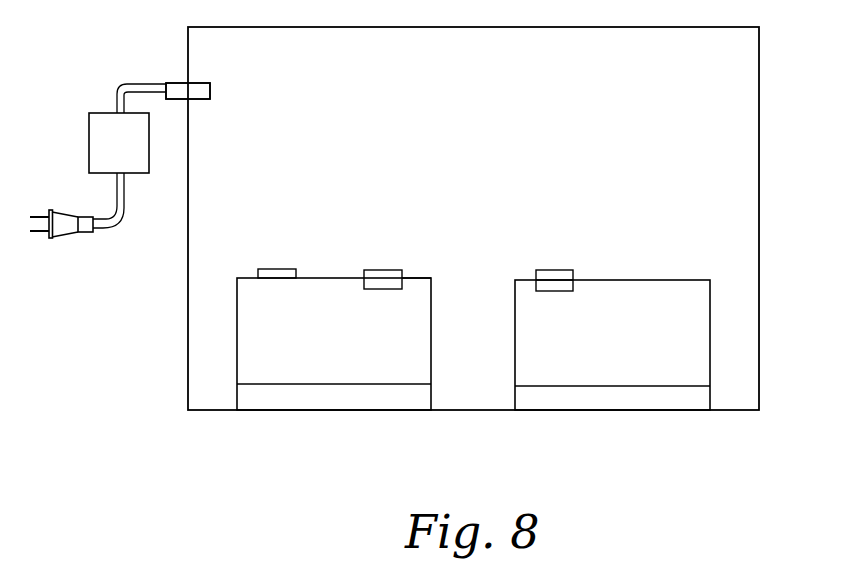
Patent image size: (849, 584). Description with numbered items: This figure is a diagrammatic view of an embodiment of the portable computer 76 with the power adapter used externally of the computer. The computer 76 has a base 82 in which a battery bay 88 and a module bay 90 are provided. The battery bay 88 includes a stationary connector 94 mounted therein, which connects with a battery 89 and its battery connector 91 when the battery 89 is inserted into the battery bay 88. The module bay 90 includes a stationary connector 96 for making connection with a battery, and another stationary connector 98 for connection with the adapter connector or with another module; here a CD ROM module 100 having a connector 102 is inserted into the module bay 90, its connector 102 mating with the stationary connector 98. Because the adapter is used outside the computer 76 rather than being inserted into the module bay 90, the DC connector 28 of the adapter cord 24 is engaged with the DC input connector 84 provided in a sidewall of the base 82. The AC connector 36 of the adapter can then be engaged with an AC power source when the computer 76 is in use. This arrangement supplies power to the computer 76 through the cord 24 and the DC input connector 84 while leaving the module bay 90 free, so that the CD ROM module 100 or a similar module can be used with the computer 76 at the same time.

The cord 24 is at (135, 84).
The DC input connector 84 is at (200, 82).
The DC connector 28 is at (173, 100).
The AC connector 36 is at (72, 234).
The base 82 is at (765, 65).
The portable computer 76 is at (434, 234).
The module bay 90 is at (343, 340).
The CD ROM module 100 is at (343, 386).
The stationary connector 96 is at (280, 269).
The stationary connector 98 is at (380, 270).
The connector 102 is at (396, 290).
The battery bay 88 is at (597, 340).
The battery 89 is at (593, 388).
The stationary connector 94 is at (557, 270).
The battery connector 91 is at (541, 293).